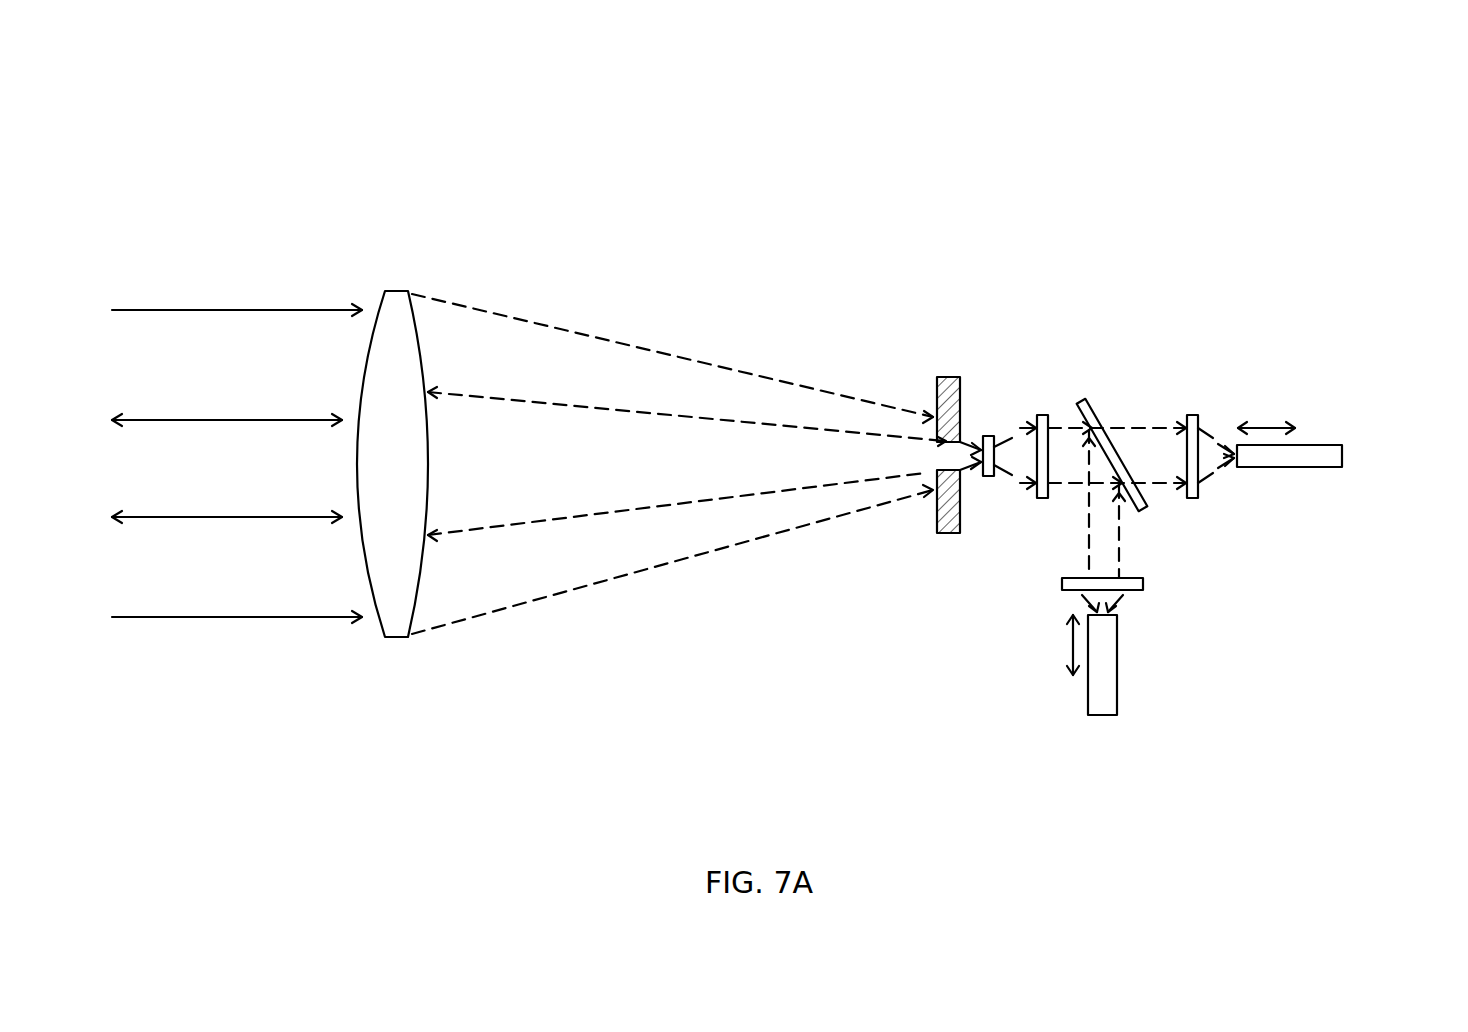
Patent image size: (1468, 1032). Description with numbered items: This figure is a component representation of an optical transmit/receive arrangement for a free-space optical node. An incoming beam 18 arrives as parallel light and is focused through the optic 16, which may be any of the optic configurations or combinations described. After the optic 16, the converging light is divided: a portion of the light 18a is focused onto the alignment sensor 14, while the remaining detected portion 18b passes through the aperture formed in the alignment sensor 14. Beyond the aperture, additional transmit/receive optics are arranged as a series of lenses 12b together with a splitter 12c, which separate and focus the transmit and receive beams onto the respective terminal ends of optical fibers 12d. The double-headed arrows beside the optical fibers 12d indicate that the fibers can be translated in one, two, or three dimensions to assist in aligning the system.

The incoming beam 18 is at (152, 308).
The optic 16 is at (400, 325).
The alignment portion of light 18a is at (545, 378).
The detected portion of light 18b is at (672, 458).
The alignment sensor 14 is at (943, 380).
The lenses 12b is at (992, 432).
The splitter 12c is at (1103, 427).
The optical fibers 12d is at (1333, 457).